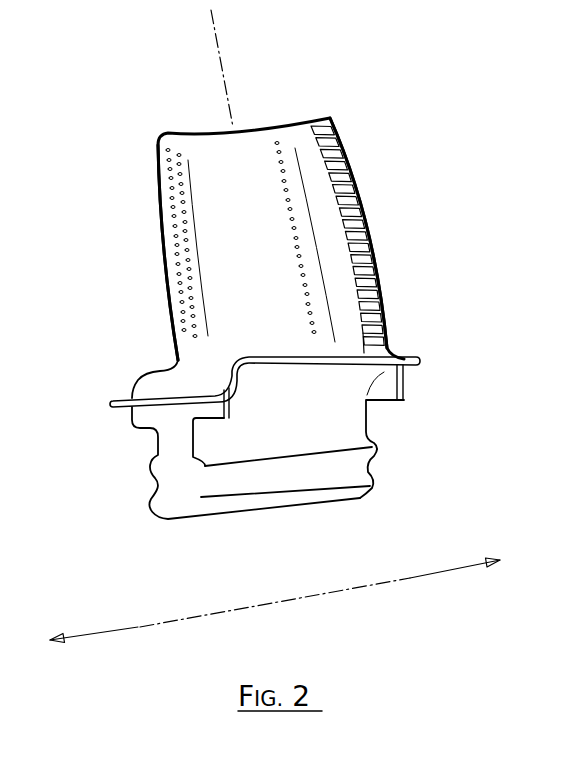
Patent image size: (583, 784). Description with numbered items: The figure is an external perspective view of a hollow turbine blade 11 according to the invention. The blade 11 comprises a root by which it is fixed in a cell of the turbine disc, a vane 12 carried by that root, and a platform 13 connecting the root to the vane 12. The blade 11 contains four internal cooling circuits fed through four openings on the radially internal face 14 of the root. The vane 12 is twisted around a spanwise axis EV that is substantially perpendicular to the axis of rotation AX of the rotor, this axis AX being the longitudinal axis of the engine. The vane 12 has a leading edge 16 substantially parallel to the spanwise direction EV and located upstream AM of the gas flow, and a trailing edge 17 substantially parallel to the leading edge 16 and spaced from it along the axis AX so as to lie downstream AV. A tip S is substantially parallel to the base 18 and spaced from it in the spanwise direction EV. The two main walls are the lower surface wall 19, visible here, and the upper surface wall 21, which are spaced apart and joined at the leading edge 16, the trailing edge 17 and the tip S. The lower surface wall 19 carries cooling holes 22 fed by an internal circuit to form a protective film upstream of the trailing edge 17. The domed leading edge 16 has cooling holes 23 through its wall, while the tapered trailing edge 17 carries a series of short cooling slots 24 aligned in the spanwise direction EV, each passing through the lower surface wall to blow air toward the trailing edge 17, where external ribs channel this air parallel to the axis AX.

The blade 11 is at (128, 68).
The vane 12 is at (380, 92).
The platform 13 is at (438, 367).
The radially internal face 14 is at (313, 525).
The leading edge 16 is at (162, 192).
The trailing edge 17 is at (357, 167).
The base 18 is at (289, 336).
The lower surface wall 19 is at (261, 245).
The upper surface wall 21 is at (158, 223).
The cooling holes 22 is at (290, 188).
The cooling holes 23 is at (185, 288).
The cooling slots 24 is at (372, 262).
The spanwise axis EV is at (212, 47).
The tip S is at (202, 125).
The axis of rotation AX is at (167, 620).
The upstream direction AM is at (103, 633).
The downstream direction AV is at (458, 572).